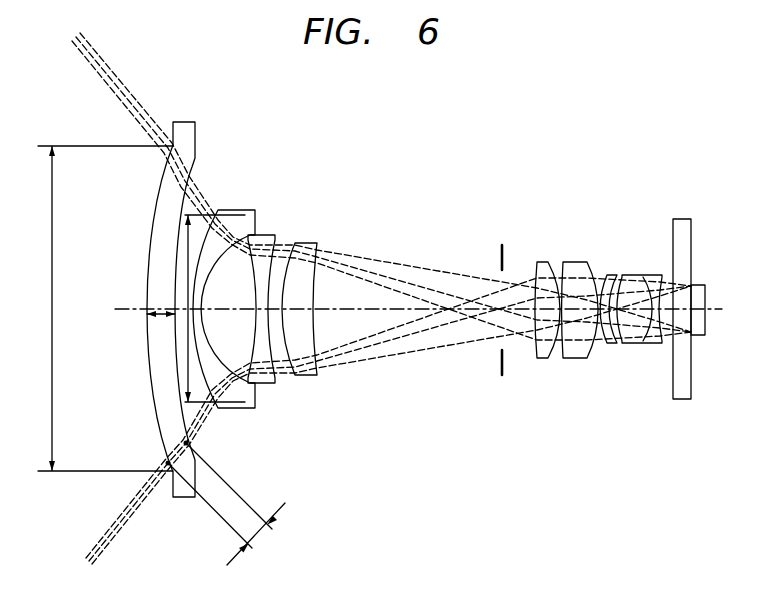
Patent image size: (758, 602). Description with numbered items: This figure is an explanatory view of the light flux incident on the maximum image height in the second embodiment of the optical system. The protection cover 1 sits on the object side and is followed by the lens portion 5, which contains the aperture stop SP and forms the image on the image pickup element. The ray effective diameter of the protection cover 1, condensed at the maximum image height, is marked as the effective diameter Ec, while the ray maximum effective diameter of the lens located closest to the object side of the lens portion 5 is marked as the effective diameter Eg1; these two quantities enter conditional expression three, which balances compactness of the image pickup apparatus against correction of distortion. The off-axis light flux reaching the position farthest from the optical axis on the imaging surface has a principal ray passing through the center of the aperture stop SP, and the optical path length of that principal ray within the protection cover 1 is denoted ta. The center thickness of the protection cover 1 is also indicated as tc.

The protection cover 1 is at (184, 130).
The lens portion 5 is at (203, 176).
The aperture stop SP is at (502, 377).
The effective diameter of the protection cover Ec is at (97, 308).
The effective diameter of the lens surface at the most object side of the lens porti Eg1 is at (182, 249).
The center thickness of cover member tc is at (155, 322).
The optical path length ta is at (256, 538).